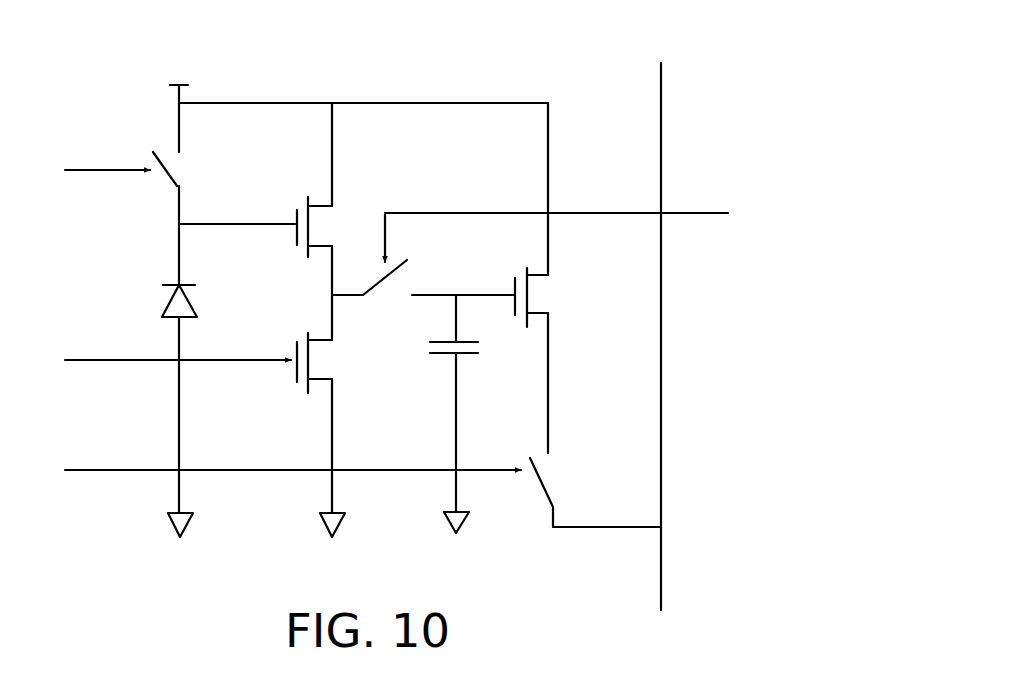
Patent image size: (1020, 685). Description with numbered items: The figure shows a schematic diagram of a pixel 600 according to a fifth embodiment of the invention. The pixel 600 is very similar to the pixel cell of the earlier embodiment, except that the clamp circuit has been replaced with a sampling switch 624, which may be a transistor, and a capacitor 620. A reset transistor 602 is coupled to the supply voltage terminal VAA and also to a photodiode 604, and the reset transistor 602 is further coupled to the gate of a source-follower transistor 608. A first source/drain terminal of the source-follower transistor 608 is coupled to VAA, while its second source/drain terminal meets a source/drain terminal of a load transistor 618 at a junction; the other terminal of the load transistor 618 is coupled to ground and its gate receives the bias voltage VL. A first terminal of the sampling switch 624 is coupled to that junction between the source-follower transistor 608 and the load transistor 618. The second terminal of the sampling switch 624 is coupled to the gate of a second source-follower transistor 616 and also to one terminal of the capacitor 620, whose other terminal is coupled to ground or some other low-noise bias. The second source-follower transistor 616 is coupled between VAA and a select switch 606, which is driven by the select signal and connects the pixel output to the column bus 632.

The pixel 600 is at (441, 39).
The reset transistor 602 is at (190, 166).
The photodiode 604 is at (167, 303).
The select switch 606 is at (566, 463).
The source-follower transistor 608 is at (348, 205).
The second source-follower transistor 616 is at (565, 277).
The load transistor 618 is at (348, 383).
The capacitor 620 is at (497, 318).
The sampling switch 624 is at (394, 291).
The column bus 632 is at (661, 162).